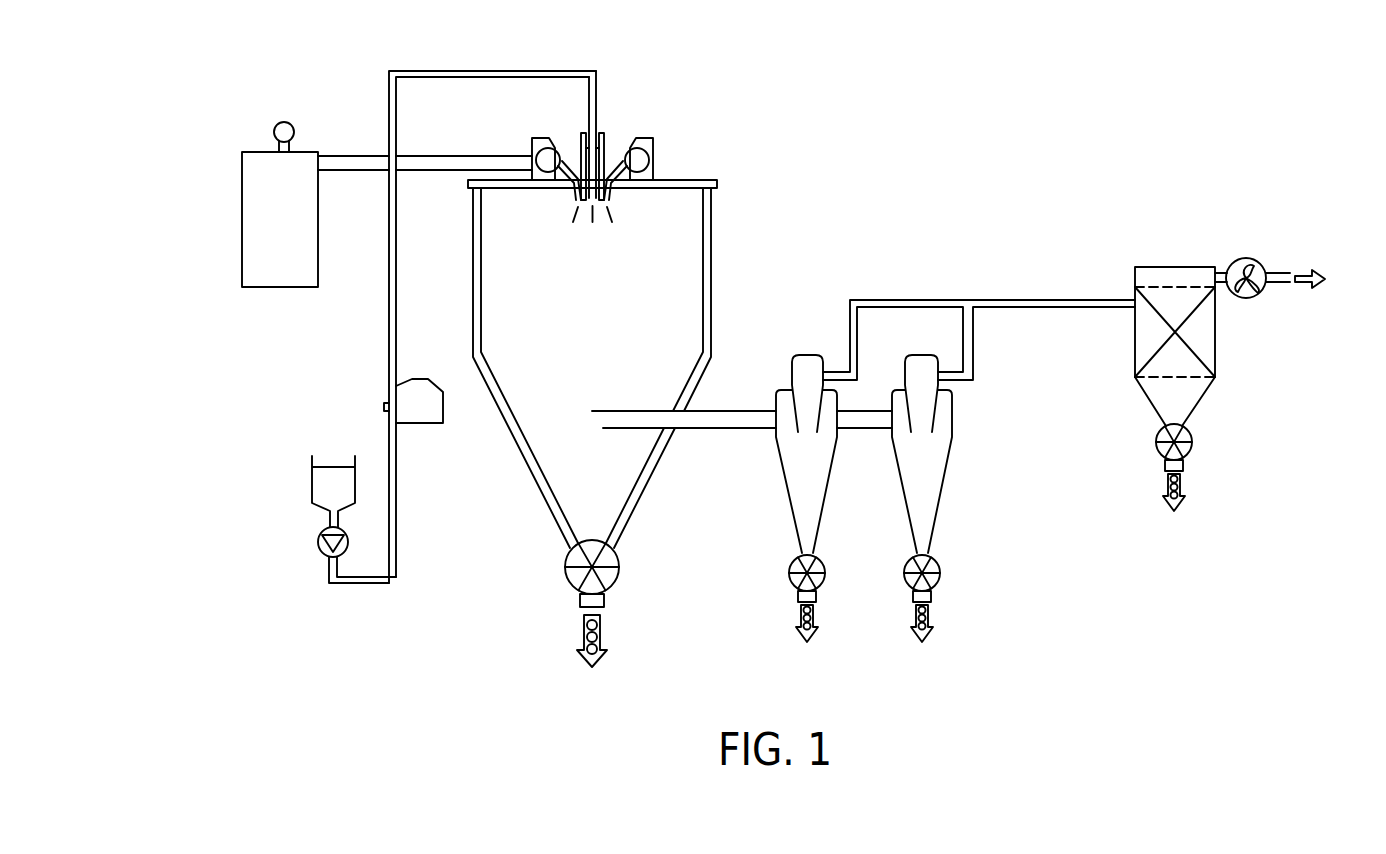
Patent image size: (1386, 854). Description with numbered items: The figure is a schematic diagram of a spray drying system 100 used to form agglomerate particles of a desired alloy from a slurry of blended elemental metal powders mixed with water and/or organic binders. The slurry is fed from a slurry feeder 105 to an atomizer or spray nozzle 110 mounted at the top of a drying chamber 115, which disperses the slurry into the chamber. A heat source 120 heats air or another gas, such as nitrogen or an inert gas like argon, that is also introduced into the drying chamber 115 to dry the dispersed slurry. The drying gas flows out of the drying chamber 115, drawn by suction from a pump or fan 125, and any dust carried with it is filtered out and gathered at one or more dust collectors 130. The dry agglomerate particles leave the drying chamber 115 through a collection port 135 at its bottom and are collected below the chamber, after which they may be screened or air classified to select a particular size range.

The spray drying system 100 is at (298, 81).
The slurry feeder 105 is at (312, 483).
The atomizer or spray nozzle 110 is at (597, 122).
The drying chamber 115 is at (712, 272).
The heat source 120 is at (238, 230).
The pump or fan 125 is at (1252, 259).
The dust collector 130 is at (790, 510).
The collection port 135 is at (566, 558).